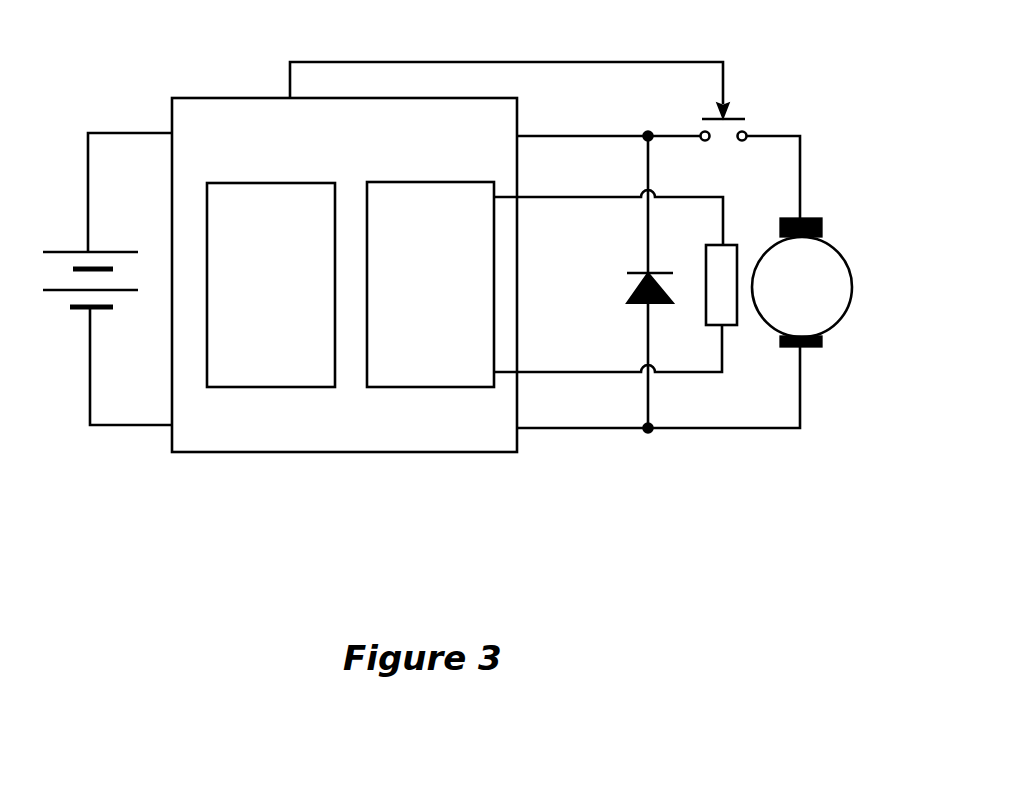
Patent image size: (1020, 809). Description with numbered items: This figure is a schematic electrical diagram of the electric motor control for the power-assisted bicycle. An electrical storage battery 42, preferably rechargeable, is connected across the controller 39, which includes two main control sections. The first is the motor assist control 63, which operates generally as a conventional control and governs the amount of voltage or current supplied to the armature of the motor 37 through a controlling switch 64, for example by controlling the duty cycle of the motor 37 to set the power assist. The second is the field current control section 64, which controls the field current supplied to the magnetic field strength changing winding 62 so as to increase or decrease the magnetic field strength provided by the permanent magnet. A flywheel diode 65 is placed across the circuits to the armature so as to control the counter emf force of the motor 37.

The motor 37 is at (851, 312).
The controller 39 is at (233, 90).
The electrical storage battery 42 is at (65, 252).
The magnetic field strength changing winding 62 is at (740, 307).
The motor assist control 63 is at (280, 388).
The field current control section 64 is at (429, 388).
The flywheel diode 65 is at (626, 288).